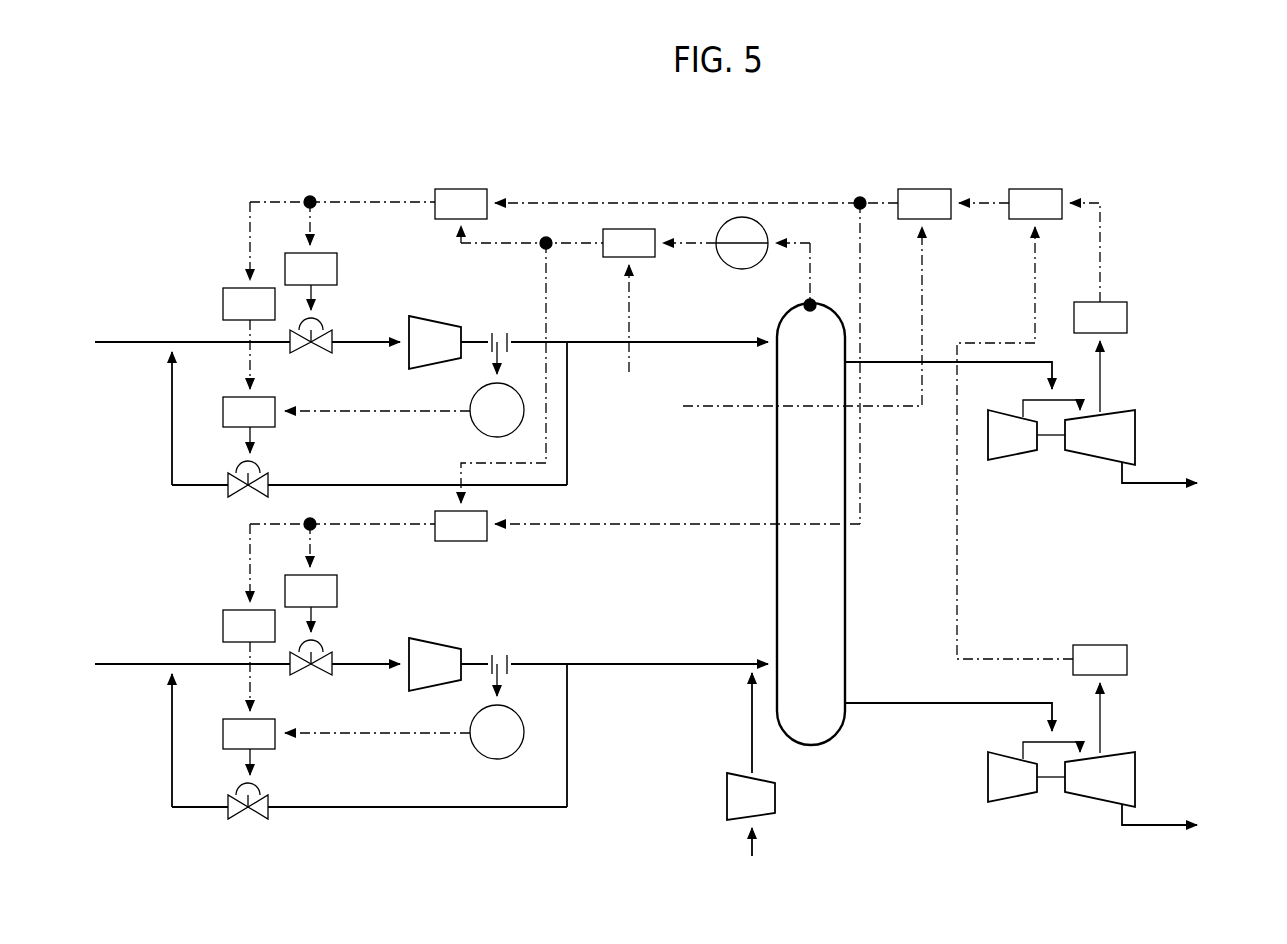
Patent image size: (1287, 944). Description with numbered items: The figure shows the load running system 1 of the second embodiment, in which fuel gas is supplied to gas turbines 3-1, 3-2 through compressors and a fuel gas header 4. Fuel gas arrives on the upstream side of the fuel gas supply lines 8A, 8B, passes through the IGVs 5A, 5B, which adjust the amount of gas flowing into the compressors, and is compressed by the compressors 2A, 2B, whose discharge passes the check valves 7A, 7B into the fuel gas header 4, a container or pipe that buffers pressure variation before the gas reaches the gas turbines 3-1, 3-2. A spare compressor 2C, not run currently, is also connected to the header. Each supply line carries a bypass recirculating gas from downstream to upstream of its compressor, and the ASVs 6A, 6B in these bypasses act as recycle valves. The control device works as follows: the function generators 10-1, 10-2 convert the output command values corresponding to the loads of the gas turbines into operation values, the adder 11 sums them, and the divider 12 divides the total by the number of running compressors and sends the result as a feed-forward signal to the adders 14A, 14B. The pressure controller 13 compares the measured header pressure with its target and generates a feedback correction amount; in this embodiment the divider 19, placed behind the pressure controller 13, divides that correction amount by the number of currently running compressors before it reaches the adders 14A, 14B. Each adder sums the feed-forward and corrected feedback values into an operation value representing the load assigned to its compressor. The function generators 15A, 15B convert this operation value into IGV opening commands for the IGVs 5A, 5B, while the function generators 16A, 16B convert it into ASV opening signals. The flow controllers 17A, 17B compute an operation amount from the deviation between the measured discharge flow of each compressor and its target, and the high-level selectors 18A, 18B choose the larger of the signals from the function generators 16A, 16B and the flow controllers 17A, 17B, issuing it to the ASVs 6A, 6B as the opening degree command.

The load running system 1 is at (1212, 210).
The compressor 2A is at (462, 332).
The compressor 2B is at (462, 654).
The spare compressor 2C is at (775, 797).
The gas turbine 3-1 is at (1010, 476).
The gas turbine 3-2 is at (972, 779).
The fuel gas header 4 is at (777, 455).
The IGV 5A is at (332, 350).
The IGV 5B is at (332, 672).
The ASV 6A is at (268, 480).
The ASV 6B is at (268, 802).
The check valve 7A is at (726, 330).
The check valve 7B is at (726, 652).
The fuel gas supply line 8A is at (118, 345).
The fuel gas supply line 8B is at (118, 667).
The function generator 10-1 is at (1127, 318).
The function generator 10-2 is at (1127, 661).
The adder 11 is at (1041, 186).
The divider 12 is at (930, 186).
The pressure controller 13 is at (768, 236).
The adder 14A is at (462, 188).
The adder 14B is at (472, 541).
The function generator 15A is at (337, 270).
The function generator 15B is at (337, 592).
The function generator 16A is at (222, 305).
The function generator 16B is at (222, 627).
The flow controller 17A is at (471, 426).
The flow controller 17B is at (476, 757).
The high-level selector 18A is at (222, 411).
The high-level selector 18B is at (222, 733).
The divider 19 is at (634, 262).